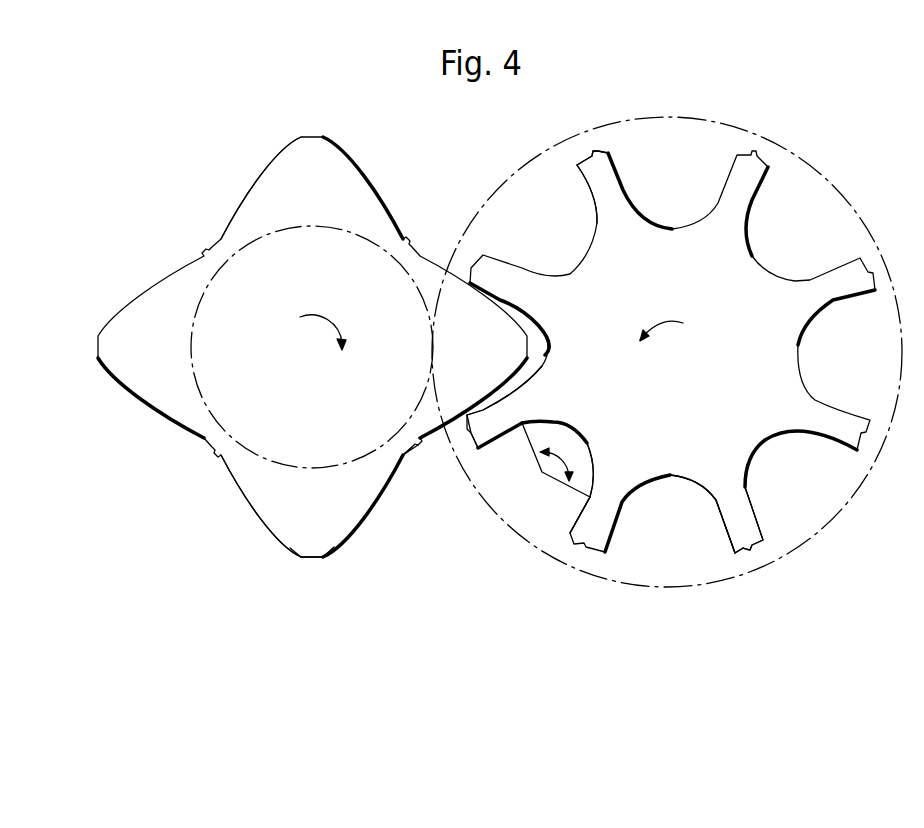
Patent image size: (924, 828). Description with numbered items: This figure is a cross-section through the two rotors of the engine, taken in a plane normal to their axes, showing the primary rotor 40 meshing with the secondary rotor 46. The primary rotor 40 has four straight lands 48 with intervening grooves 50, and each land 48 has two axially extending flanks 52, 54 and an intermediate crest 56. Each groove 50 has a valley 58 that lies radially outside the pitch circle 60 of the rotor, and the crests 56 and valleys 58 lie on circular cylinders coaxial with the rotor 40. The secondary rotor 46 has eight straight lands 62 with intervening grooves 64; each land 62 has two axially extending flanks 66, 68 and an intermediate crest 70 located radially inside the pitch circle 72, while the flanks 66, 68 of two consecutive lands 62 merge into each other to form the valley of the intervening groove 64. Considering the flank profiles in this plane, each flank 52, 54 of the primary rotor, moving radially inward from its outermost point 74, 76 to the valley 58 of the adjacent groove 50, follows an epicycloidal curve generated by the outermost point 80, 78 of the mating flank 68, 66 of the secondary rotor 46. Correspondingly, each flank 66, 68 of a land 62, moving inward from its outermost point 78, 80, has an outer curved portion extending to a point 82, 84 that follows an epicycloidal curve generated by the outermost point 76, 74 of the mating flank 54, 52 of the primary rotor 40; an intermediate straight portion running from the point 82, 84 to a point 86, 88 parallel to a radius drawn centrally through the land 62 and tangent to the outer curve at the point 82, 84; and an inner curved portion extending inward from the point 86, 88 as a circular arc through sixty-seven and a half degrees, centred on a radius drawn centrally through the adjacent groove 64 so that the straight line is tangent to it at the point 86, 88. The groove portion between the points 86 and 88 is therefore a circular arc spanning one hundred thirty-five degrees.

The primary rotor 40 is at (148, 300).
The secondary rotor 46 is at (775, 372).
The straight lands 48 is at (262, 197).
The grooves 50 is at (217, 226).
The flank 52 is at (242, 500).
The flank 54 is at (373, 515).
The crest 56 is at (312, 559).
The valley 58 is at (412, 462).
The pitch circle 60 is at (338, 236).
The straight lands 62 is at (750, 517).
The grooves 64 is at (660, 488).
The flank 66 is at (585, 190).
The flank 68 is at (620, 190).
The crest 70 is at (587, 158).
The pitch circle 72 is at (843, 202).
The outermost point 74 is at (298, 558).
The outermost point 76 is at (322, 557).
The outermost point 78 is at (478, 446).
The outermost point 80 is at (580, 518).
The point 82 is at (495, 436).
The point 84 is at (580, 520).
The point 86 is at (523, 425).
The point 88 is at (590, 497).